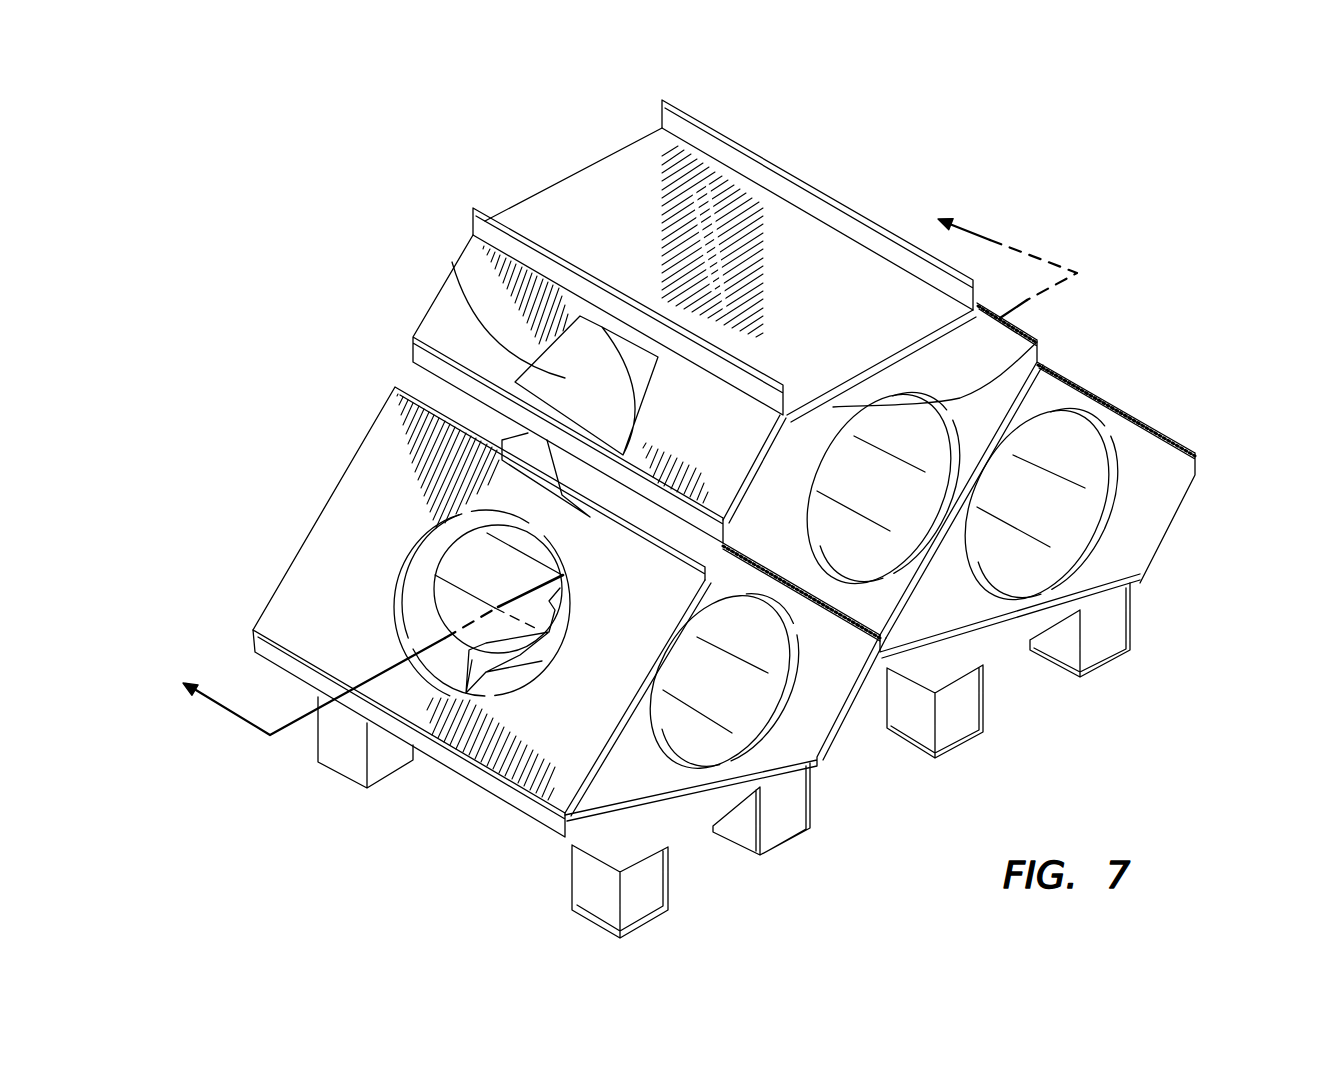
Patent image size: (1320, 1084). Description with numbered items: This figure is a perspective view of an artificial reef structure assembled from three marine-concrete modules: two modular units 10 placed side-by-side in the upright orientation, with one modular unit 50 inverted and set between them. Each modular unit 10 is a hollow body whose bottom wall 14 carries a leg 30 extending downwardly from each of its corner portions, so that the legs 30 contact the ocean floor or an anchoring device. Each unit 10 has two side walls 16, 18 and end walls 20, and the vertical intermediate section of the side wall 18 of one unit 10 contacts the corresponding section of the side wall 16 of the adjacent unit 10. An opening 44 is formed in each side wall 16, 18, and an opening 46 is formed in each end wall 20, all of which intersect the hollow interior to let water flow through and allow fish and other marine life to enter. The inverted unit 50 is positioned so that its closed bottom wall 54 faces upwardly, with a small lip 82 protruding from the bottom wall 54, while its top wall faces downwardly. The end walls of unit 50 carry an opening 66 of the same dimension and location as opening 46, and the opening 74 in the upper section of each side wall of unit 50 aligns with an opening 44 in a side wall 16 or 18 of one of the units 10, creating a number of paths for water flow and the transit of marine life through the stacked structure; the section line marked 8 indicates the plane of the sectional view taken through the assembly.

The modular unit 10 is at (258, 560).
The bottom wall 14 is at (690, 850).
The side wall 16 is at (485, 823).
The side wall 18 is at (1177, 418).
The end wall 20 is at (378, 413).
The leg 30 is at (352, 782).
The opening 44 is at (453, 572).
The opening 46 is at (703, 760).
The modular unit 50 is at (485, 170).
The bottom wall 54 is at (607, 152).
The opening 66 is at (1027, 343).
The opening 74 is at (567, 375).
The lip 82 is at (470, 217).
The section line 8- 8 is at (617, 464).